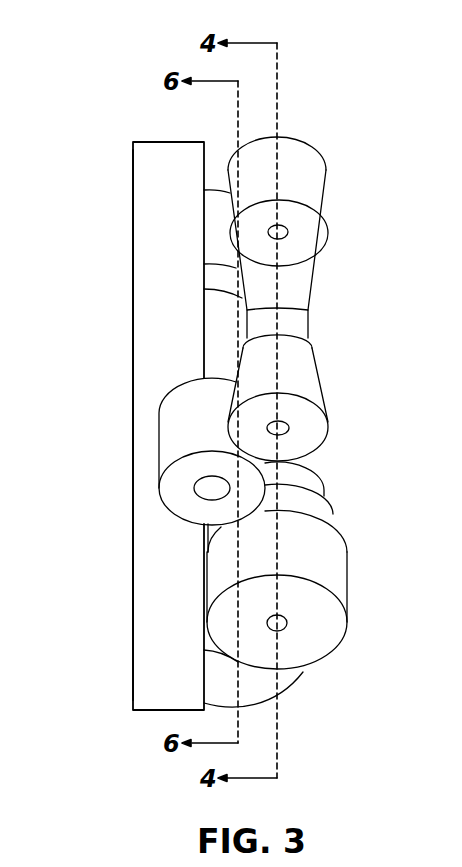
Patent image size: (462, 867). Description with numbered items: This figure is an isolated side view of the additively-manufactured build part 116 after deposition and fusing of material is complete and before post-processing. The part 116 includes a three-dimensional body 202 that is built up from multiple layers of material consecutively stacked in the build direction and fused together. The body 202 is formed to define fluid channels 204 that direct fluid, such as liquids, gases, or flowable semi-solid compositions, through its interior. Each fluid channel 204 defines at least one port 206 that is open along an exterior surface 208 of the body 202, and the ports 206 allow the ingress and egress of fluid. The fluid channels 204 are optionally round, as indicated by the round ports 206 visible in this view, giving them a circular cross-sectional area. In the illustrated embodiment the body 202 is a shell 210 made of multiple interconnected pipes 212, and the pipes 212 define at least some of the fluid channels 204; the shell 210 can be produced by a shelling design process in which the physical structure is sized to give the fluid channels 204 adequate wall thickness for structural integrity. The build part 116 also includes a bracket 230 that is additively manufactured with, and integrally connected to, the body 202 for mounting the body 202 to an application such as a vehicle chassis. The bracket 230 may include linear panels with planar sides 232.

The additively-manufactured build part 116 is at (326, 160).
The three-dimensional body 202 is at (295, 138).
The fluid channel 204 is at (285, 223).
The port 206 is at (291, 221).
The exterior surface 208 is at (312, 240).
The shell 210 is at (313, 332).
The pipe 212 is at (325, 270).
The bracket 230 is at (150, 172).
The planar side 232 is at (131, 267).